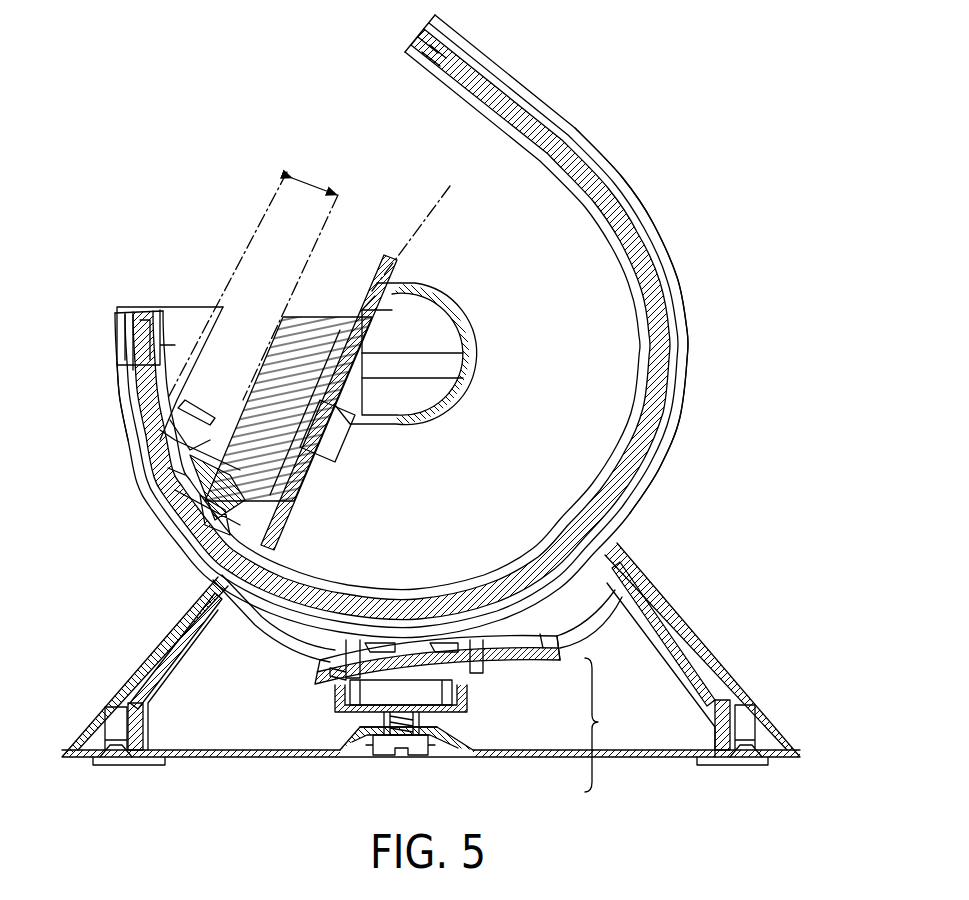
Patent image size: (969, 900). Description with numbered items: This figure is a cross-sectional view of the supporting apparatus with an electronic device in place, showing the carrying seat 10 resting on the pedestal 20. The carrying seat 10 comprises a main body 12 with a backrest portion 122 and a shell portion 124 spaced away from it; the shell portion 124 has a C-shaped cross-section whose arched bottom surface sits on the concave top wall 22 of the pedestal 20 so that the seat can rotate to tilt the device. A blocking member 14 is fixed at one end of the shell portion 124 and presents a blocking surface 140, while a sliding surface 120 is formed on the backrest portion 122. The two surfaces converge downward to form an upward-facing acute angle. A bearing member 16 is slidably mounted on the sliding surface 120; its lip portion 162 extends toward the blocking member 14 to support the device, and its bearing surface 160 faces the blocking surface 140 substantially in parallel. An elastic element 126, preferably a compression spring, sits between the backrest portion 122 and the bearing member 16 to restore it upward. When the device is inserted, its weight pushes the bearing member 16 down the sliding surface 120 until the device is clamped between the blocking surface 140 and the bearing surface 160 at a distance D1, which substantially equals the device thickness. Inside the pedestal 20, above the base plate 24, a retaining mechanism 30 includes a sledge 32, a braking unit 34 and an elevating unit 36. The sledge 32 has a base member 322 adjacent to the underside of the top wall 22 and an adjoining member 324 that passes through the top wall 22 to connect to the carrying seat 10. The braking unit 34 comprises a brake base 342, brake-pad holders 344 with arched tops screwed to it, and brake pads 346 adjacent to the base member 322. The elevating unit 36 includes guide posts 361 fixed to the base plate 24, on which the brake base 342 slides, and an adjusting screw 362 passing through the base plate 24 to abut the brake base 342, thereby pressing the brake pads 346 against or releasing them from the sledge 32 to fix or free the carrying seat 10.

The carrying seat 10 is at (130, 490).
The main body 12 is at (552, 100).
The sliding surface 120 is at (425, 238).
The backrest portion 122 is at (474, 343).
The shell portion 124 is at (660, 238).
The elastic element 126 is at (318, 450).
The blocking member 14 is at (185, 318).
The blocking surface 140 is at (262, 222).
The bearing surface 160 is at (308, 265).
The lip portion 162 is at (193, 410).
The bearing member 16 is at (313, 326).
The pedestal 20 is at (133, 655).
The top wall 22 is at (216, 578).
The base plate 24 is at (206, 760).
The retaining mechanism 30 is at (607, 725).
The sledge 32 is at (510, 667).
The base member 322 is at (557, 633).
The adjoining member 324 is at (497, 640).
The braking unit 34 is at (473, 700).
The brake base 342 is at (348, 712).
The brake-pad holders 344 is at (365, 693).
The brake pads 346 is at (347, 678).
The elevating unit 36 is at (442, 762).
The guide posts 361 is at (385, 720).
The adjusting screw 362 is at (385, 747).
The distance D1 is at (314, 178).